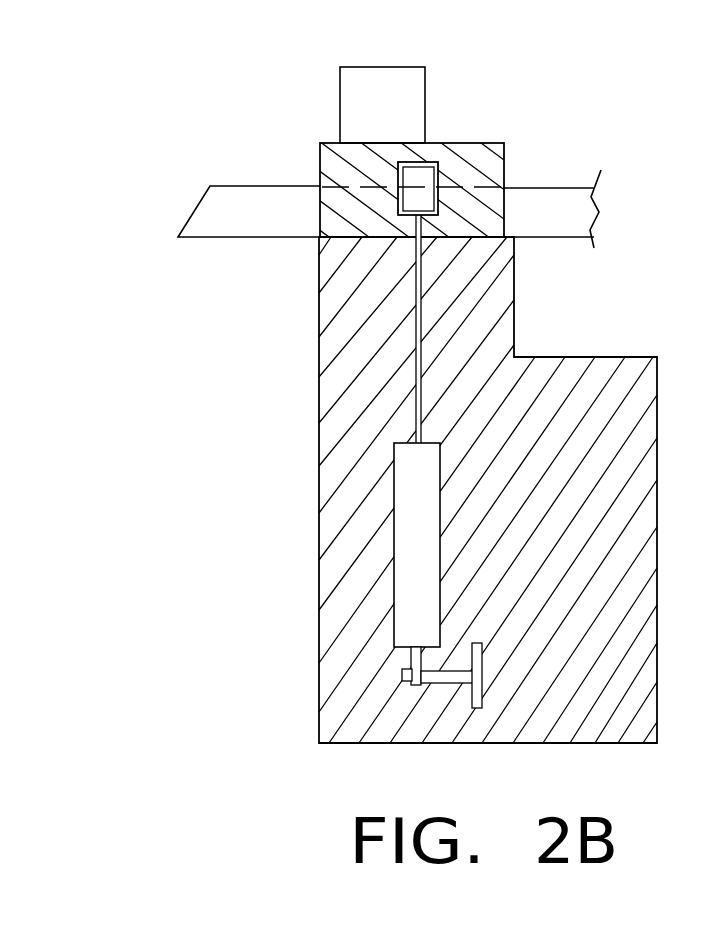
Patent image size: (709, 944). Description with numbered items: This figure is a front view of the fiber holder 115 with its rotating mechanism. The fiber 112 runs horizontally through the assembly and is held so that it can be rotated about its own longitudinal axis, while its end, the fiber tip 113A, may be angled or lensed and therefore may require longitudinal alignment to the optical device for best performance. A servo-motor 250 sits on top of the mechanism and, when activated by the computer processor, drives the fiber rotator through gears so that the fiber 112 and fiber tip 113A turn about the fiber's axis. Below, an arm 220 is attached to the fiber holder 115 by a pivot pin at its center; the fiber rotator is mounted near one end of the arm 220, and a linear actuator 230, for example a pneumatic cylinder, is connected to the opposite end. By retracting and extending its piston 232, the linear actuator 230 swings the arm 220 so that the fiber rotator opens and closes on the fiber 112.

The fiber holder 115 is at (319, 531).
The arm 220 is at (320, 167).
The piston 232 is at (417, 282).
The linear actuator 230 is at (441, 505).
The servo-motor 250 is at (367, 67).
The fiber tip 113A is at (193, 210).
The fiber 112 is at (538, 188).